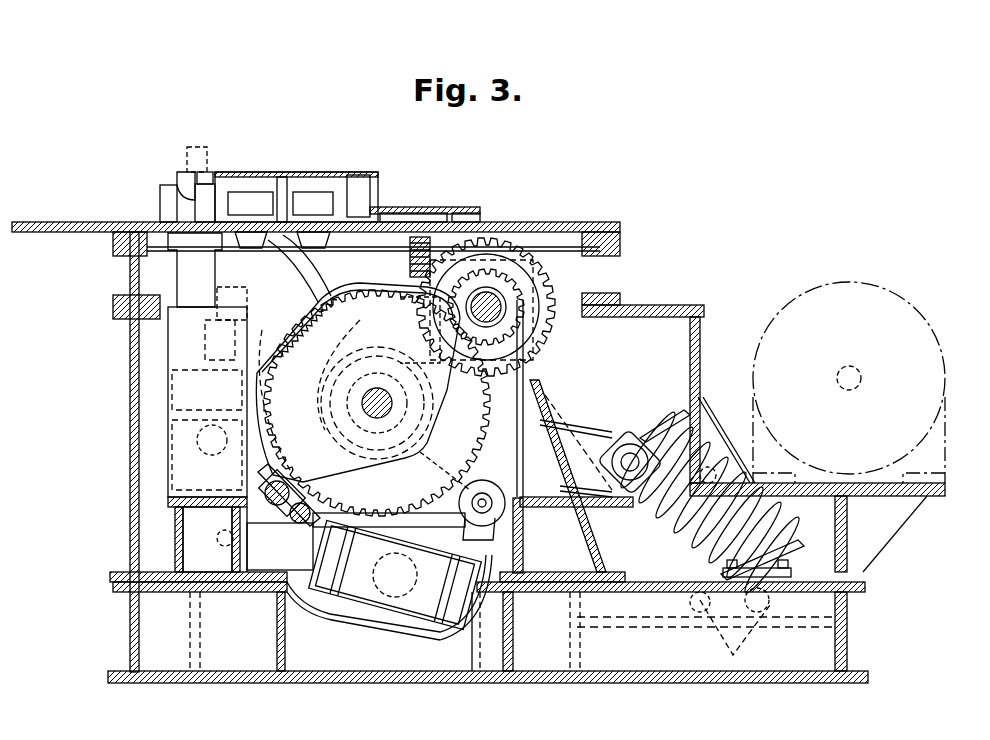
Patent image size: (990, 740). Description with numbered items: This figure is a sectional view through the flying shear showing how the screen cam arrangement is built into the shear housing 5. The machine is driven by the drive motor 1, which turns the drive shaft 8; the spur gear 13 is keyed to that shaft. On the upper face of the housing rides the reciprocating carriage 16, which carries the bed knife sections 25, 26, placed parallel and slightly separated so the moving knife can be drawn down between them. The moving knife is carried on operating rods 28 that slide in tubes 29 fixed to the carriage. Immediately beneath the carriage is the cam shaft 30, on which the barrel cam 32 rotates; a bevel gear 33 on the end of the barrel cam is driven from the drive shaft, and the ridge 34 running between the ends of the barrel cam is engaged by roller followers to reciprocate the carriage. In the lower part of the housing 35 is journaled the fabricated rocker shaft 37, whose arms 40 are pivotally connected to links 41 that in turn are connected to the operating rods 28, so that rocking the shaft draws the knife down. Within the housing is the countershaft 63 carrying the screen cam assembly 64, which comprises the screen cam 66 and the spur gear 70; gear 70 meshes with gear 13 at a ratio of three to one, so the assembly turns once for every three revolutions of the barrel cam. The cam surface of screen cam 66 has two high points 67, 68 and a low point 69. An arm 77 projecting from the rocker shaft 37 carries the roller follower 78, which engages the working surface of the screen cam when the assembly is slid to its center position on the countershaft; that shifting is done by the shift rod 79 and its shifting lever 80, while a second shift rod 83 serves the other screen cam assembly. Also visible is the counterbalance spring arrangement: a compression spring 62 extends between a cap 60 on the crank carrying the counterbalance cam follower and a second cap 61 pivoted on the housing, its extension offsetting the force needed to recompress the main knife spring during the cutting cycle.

The drive motor 1 is at (810, 290).
The shear housing 5 is at (130, 512).
The drive shaft 8 is at (498, 316).
The spur gear 13 is at (515, 288).
The reciprocating carriage 16 is at (295, 175).
The bed knife section 25 is at (212, 174).
The bed knife section 26 is at (180, 172).
The operating rod 28 is at (200, 150).
The tube 29 is at (204, 280).
The cam shaft 30 is at (250, 295).
The barrel cam 32 is at (372, 255).
The bevel gear 33 is at (420, 237).
The ridge 34 is at (300, 262).
The housing 35 is at (255, 232).
The rocker shaft 37 is at (372, 615).
The arm 40 is at (240, 518).
The link 41 is at (530, 240).
The cap 60 is at (655, 420).
The second cap 61 is at (805, 560).
The compression spring 62 is at (745, 514).
The countershaft 63 is at (392, 408).
The screen cam assembly 64 is at (390, 323).
The screen cam 66 is at (445, 378).
The high point 67 is at (262, 457).
The high point 68 is at (390, 290).
The low point 69 is at (310, 332).
The spur gear 70 is at (484, 420).
The arm 77 is at (452, 613).
The roller follower 78 is at (502, 488).
The shift rod 79 is at (265, 486).
The shifting lever 80 is at (332, 398).
The second shift rod 83 is at (308, 505).